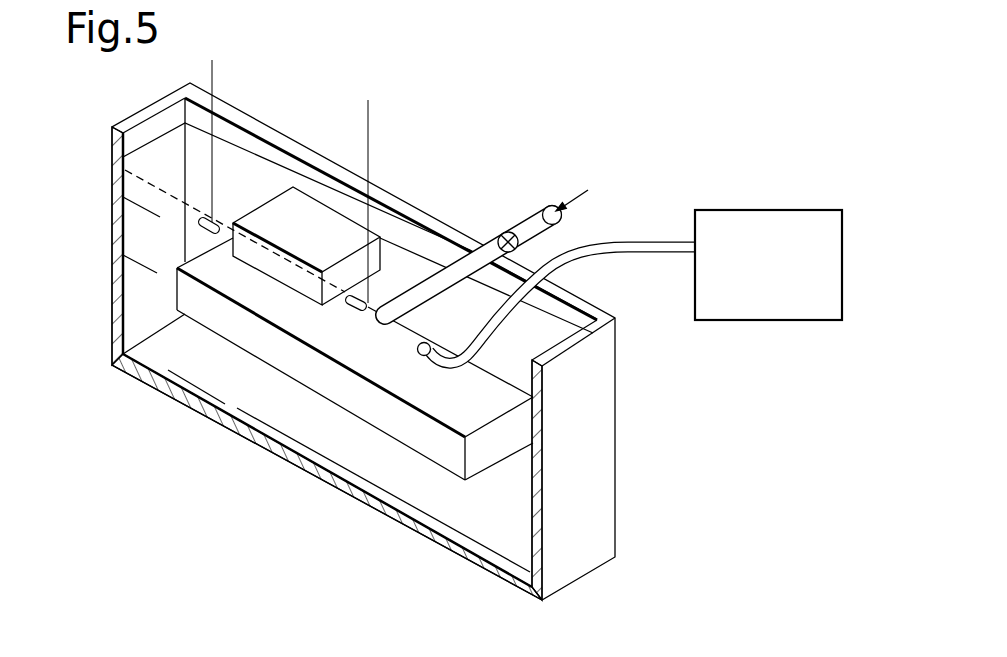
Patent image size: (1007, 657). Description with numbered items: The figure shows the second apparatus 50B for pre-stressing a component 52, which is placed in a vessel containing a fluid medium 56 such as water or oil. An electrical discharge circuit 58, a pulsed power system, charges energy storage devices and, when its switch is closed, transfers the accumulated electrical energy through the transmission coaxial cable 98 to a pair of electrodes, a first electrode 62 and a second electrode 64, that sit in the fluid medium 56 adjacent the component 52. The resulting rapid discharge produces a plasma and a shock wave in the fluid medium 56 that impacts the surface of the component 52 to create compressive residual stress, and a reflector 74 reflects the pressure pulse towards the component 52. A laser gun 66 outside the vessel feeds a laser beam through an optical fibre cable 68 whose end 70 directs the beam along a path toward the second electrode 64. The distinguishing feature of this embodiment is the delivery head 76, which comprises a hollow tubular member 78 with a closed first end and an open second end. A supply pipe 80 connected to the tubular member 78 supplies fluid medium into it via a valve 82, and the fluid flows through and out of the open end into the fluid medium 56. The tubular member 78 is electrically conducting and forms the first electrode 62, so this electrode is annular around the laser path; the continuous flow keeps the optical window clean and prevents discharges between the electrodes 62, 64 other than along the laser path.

The second apparatus 50B is at (550, 482).
The component 52 is at (545, 427).
The fluid medium 56 is at (503, 580).
The electrical discharge circuit 58 is at (482, 147).
The first electrode 62 is at (353, 327).
The second electrode 64 is at (200, 224).
The laser gun 66 is at (784, 283).
The optical fibre cable 68 is at (636, 246).
The end of the optical fibre cable 70 is at (425, 356).
The reflector 74 is at (308, 230).
The delivery head 76 is at (345, 312).
The hollow tubular member 78 is at (313, 300).
The supply pipe 80 is at (422, 292).
The valve 82 is at (508, 232).
The transmission coaxial cable 98 is at (214, 80).